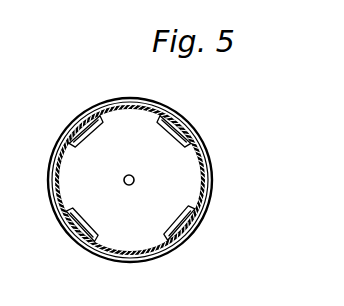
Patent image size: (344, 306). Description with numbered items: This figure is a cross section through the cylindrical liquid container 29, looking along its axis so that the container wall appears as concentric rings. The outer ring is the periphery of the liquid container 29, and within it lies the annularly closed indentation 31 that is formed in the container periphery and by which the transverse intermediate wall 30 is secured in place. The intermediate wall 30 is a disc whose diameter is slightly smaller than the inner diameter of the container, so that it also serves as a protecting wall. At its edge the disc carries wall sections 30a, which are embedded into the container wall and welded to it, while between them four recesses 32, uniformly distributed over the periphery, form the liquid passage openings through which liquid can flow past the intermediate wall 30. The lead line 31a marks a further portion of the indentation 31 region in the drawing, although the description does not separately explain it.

The outer ring 29 is at (183, 113).
The lower lug 30 is at (195, 210).
The lower lug 30a is at (63, 192).
The hatched ring 31 is at (211, 153).
The upper lug 31a is at (72, 133).
The upper lug slot 32 is at (168, 110).